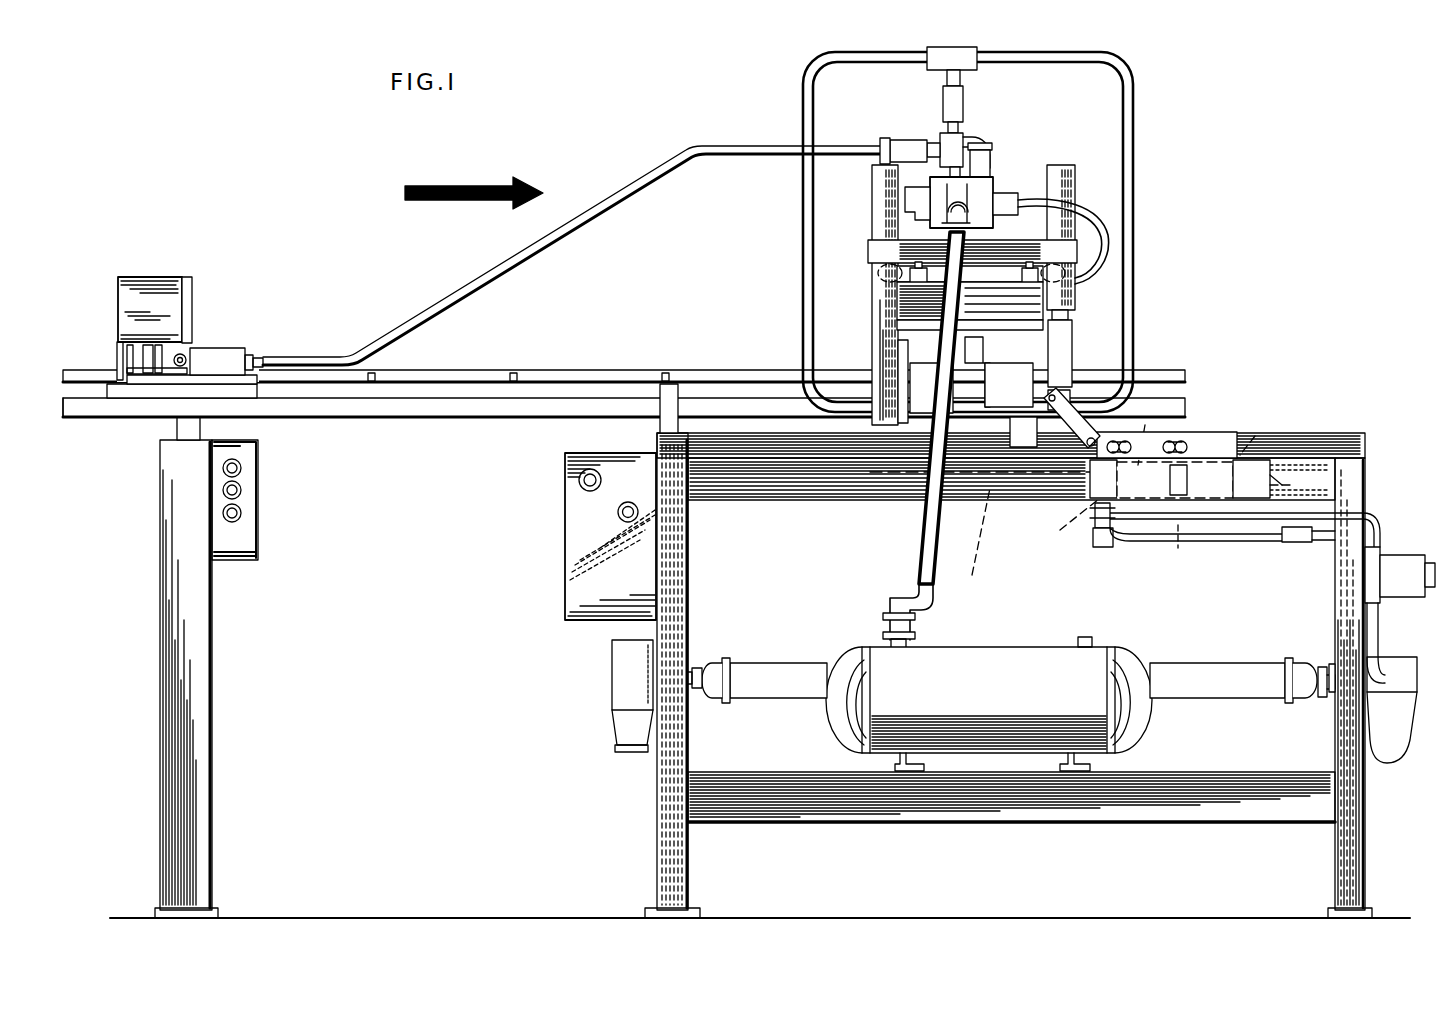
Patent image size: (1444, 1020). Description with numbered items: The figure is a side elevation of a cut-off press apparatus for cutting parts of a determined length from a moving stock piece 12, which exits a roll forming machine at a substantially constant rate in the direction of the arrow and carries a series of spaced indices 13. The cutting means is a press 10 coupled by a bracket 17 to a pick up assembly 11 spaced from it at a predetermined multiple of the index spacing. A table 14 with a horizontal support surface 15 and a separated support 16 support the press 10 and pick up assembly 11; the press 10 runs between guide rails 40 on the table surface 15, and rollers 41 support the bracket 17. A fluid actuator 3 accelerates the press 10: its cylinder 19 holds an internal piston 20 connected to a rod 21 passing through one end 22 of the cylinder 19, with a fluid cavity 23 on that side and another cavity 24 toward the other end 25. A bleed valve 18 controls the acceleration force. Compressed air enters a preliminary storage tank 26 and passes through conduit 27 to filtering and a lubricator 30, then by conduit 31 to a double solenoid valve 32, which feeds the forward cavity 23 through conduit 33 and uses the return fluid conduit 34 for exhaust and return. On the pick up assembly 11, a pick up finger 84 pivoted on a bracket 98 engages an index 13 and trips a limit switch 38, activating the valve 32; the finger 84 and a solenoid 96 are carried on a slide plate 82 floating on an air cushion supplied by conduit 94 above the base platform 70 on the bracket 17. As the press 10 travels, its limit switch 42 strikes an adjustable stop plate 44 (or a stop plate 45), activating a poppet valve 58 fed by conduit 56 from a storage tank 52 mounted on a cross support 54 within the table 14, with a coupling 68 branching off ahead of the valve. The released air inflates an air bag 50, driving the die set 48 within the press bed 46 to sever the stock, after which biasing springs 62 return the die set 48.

The fluid actuator 3 is at (1020, 530).
The press 10 is at (1170, 118).
The pick up assembly 11 is at (176, 311).
The stock piece 12 is at (598, 369).
The spaced indices 13 is at (511, 372).
The table 14 is at (567, 667).
The horizontal support surface 15 is at (1304, 437).
The separated support 16 is at (148, 503).
The bracket 17 is at (437, 419).
The bleed valve 18 is at (1105, 548).
The cylinder 19 is at (1094, 525).
The internal piston 20 is at (1179, 550).
The rod 21 is at (977, 537).
The one end of the cylinder 22 is at (1063, 519).
The fluid cavity 23 is at (1149, 433).
The cavity 24 is at (1262, 433).
The other end of the cylinder 25 is at (1283, 480).
The preliminary storage tank 26 is at (770, 670).
The conduit 27 is at (1330, 665).
The lubricator 30 is at (1397, 670).
The conduit 31 is at (1383, 618).
The double solenoid valve 32 is at (1428, 560).
The conduit 33 is at (1212, 530).
The return fluid conduit 34 is at (1275, 545).
The limit switch 38 is at (216, 321).
The guide rails 40 is at (740, 460).
The rollers 41 is at (660, 425).
The limit switch 42 is at (1080, 397).
The stop plate 44 is at (1213, 432).
The stop plate 45 is at (1018, 428).
The press bed 46 is at (868, 330).
The die set 48 is at (905, 383).
The air bag 50 is at (1055, 262).
The storage tank 52 is at (1160, 728).
The cross support 54 is at (1044, 62).
The conduit 56 is at (922, 545).
The poppet valve 58 is at (994, 184).
The biasing springs 62 is at (872, 208).
The coupling 68 is at (937, 130).
The base platform 70 is at (100, 405).
The slide plate 82 is at (145, 393).
The pick up finger 84 is at (128, 370).
The conduit 94 is at (575, 222).
The solenoid 96 is at (160, 277).
The bracket 98 is at (118, 352).